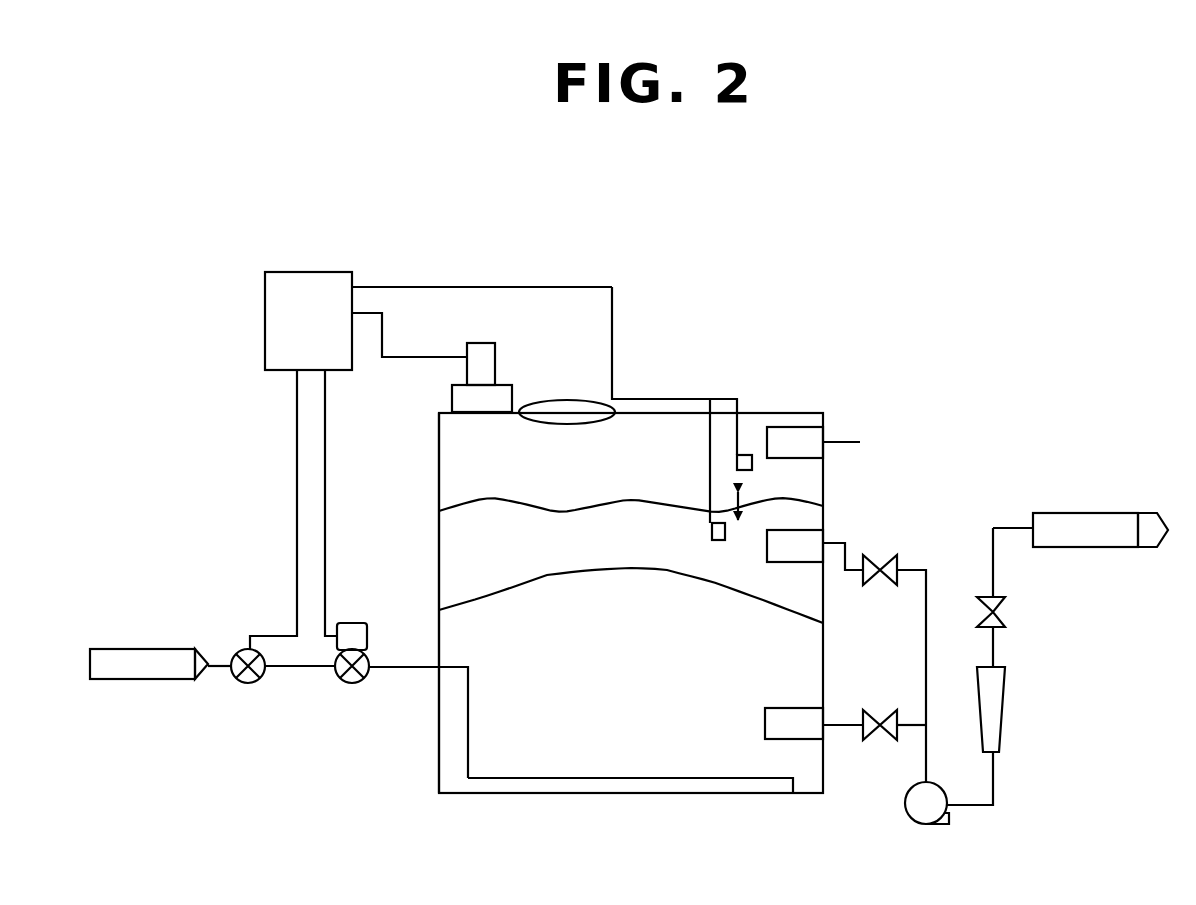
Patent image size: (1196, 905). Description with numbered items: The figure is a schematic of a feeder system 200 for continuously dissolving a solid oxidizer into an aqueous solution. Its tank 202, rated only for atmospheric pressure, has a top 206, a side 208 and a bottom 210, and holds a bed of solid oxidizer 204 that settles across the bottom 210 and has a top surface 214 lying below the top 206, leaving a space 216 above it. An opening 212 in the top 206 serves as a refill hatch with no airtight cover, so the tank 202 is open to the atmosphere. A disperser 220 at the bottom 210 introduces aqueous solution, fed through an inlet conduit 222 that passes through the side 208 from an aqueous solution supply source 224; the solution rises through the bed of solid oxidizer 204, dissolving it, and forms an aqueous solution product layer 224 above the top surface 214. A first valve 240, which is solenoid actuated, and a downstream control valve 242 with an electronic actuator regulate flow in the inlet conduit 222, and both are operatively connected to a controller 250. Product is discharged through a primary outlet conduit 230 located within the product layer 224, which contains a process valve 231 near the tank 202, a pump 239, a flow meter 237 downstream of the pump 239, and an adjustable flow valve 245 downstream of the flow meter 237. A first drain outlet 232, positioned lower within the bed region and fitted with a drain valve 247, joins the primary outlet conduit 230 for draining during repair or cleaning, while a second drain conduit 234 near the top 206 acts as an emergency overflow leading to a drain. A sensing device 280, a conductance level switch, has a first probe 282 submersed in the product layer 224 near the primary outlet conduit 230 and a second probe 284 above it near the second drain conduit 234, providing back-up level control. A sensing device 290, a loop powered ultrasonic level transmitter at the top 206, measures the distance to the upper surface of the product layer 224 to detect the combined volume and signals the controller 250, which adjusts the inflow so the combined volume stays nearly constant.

The feeder system 200 is at (704, 256).
The tank 202 is at (803, 412).
The bed of solid oxidizer 204 is at (642, 701).
The top 206 is at (672, 412).
The side 208 is at (439, 540).
The bottom 210 is at (813, 785).
The opening 212 is at (572, 410).
The top surface 214 is at (545, 572).
The space 216 is at (527, 475).
The disperser 220 is at (607, 784).
The inlet conduit 222 is at (468, 760).
The aqueous solution supply source / aqueous solution product layer 224 is at (125, 658).
The primary outlet conduit 230 is at (918, 568).
The process valve 231 is at (868, 560).
The first drain outlet 232 is at (846, 728).
The second drain conduit 234 is at (862, 440).
The flow meter 237 is at (1000, 730).
The pump 239 is at (921, 815).
The first valve 240 is at (243, 682).
The control valve 242 is at (358, 682).
The adjustable flow valve 245 is at (1006, 611).
The drain valve 247 is at (868, 708).
The controller 250 is at (317, 282).
The sensing device 280 is at (724, 385).
The first probe 282 is at (713, 542).
The second probe 284 is at (665, 461).
The sensing device 290 is at (477, 350).